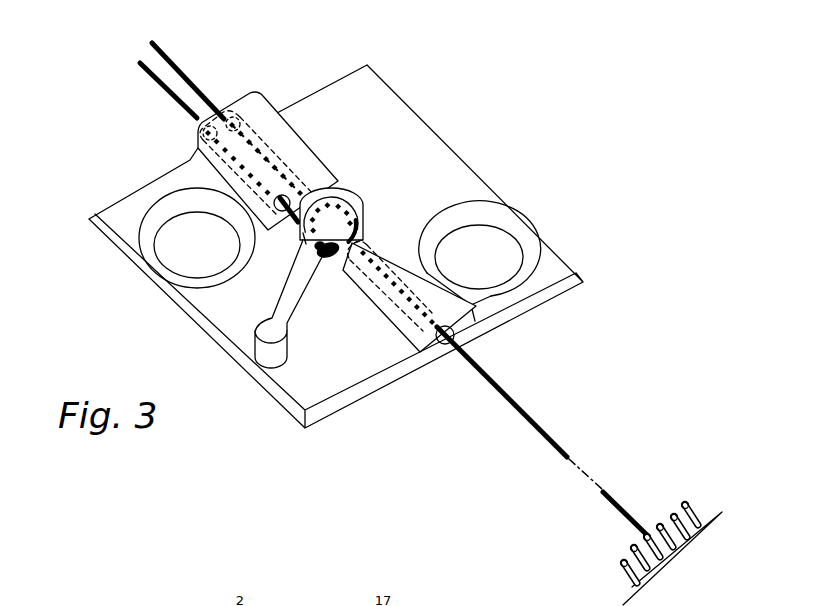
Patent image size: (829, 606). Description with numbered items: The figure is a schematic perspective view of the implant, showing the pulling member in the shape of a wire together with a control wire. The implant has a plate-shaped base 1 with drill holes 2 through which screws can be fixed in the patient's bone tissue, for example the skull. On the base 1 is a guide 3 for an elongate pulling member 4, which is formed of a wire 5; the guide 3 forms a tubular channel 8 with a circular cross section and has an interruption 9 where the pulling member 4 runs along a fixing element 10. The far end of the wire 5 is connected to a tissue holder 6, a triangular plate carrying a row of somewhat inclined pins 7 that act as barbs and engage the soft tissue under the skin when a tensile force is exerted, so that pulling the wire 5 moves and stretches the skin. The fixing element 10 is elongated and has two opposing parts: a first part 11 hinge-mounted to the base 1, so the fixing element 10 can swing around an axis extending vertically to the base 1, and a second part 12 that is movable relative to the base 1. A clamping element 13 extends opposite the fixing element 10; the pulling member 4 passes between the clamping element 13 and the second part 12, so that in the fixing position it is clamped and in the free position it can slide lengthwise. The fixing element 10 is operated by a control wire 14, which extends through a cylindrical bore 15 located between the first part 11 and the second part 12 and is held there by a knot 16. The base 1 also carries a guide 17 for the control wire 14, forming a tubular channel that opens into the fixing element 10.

The base 1 is at (336, 246).
The drill holes 2 is at (183, 247).
The guide 3 is at (419, 281).
The pulling member 4 is at (185, 75).
The wire 5 is at (493, 380).
The tissue holder 6 is at (632, 587).
The pins 7 is at (688, 503).
The tubular channel 8 is at (388, 264).
The interruption 9 is at (354, 200).
The fixing element 10 is at (292, 288).
The first part 11 is at (267, 358).
The second part 12 is at (331, 217).
The clamping element 13 is at (362, 205).
The control wire 14 is at (152, 80).
The cylindrical bore 15 is at (303, 236).
The knot 16 is at (332, 256).
The guide 17 is at (267, 156).